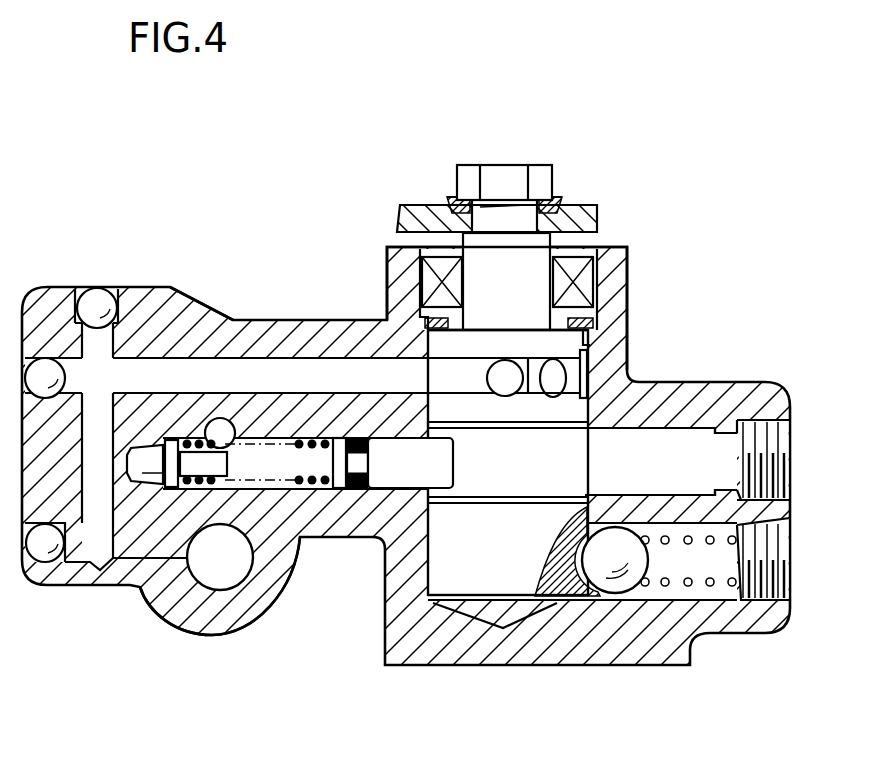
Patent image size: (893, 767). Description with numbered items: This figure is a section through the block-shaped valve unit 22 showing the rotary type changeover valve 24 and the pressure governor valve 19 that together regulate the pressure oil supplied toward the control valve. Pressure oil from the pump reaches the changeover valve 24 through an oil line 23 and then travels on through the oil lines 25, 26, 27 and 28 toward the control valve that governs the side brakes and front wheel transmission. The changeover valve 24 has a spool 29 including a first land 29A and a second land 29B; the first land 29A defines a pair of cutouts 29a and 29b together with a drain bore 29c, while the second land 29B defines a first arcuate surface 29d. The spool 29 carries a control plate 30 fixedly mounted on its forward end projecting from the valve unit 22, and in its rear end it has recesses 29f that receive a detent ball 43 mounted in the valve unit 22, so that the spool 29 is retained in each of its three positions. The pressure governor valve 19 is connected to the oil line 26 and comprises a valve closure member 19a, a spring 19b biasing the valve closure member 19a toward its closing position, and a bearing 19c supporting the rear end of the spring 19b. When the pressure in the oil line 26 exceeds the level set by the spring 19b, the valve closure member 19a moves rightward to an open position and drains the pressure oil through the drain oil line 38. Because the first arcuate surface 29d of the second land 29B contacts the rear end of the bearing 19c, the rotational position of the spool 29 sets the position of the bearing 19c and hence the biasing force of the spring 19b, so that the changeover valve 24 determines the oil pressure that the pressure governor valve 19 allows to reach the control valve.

The pressure governor valve 19 is at (342, 500).
The valve closure member 19a is at (150, 467).
The spring 19b is at (300, 485).
The bearing 19c is at (400, 478).
The valve unit 22 is at (297, 316).
The oil line 23 is at (499, 370).
The rotary type changeover valve 24 is at (613, 230).
The oil line 25 is at (242, 368).
The oil line 26 is at (95, 513).
The oil line 27 is at (172, 547).
The oil line 28 is at (230, 580).
The spool 29 is at (453, 587).
The cutout 29a is at (437, 377).
The first land 29A is at (594, 345).
The cutout 29b is at (592, 374).
The second land 29B is at (592, 466).
The drain bore 29c is at (503, 553).
The first arcuate surface 29d is at (508, 551).
The recess 29f is at (602, 563).
The control plate 30 is at (420, 207).
The drain oil line 38 is at (212, 428).
The detent ball 43 is at (622, 577).